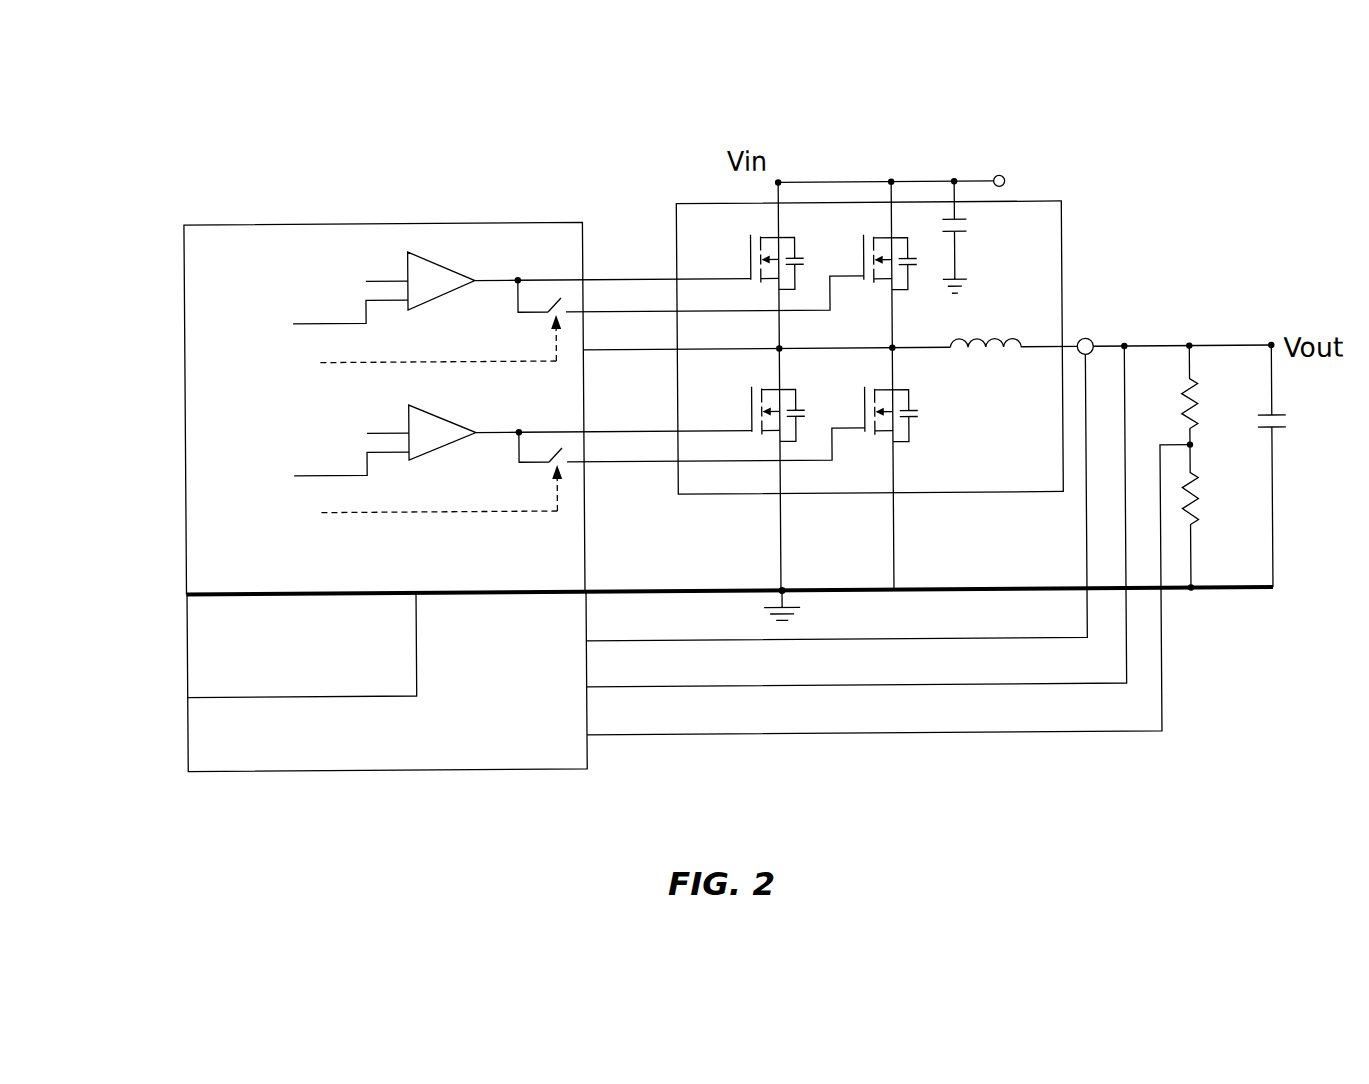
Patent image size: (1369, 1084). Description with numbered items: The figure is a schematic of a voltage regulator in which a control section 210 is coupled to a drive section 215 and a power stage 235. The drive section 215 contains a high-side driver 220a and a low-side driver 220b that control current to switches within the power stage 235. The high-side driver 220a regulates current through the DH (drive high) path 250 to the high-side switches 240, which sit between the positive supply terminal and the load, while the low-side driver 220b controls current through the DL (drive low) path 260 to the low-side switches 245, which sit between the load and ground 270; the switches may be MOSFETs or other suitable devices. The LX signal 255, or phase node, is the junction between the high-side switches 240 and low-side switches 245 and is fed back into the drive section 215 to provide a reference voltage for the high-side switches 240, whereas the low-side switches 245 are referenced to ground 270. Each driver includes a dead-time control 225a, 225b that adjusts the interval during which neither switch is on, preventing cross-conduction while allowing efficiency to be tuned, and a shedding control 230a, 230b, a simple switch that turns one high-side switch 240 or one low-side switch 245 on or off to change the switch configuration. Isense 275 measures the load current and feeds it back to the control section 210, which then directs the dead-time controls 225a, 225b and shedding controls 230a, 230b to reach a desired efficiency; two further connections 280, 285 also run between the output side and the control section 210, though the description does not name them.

The control section 210 is at (187, 734).
The drive section 215 is at (186, 421).
The high-side driver 220a is at (410, 260).
The low-side driver 220b is at (410, 415).
The dead-time control 225a is at (327, 321).
The dead-time control 225b is at (327, 473).
The shedding control 230a is at (563, 296).
The shedding control 230b is at (563, 446).
The power stage 235 is at (1064, 247).
The high-side switches 240 is at (910, 227).
The low-side switches 245 is at (797, 442).
The DH (drive high) path 250 is at (595, 281).
The LX signal 255 is at (595, 351).
The DL (drive low) path 260 is at (595, 433).
The ground 270 is at (682, 593).
The Isense 275 is at (682, 643).
The OUT output voltage sense 280 is at (682, 689).
The FB feedback input 285 is at (682, 737).